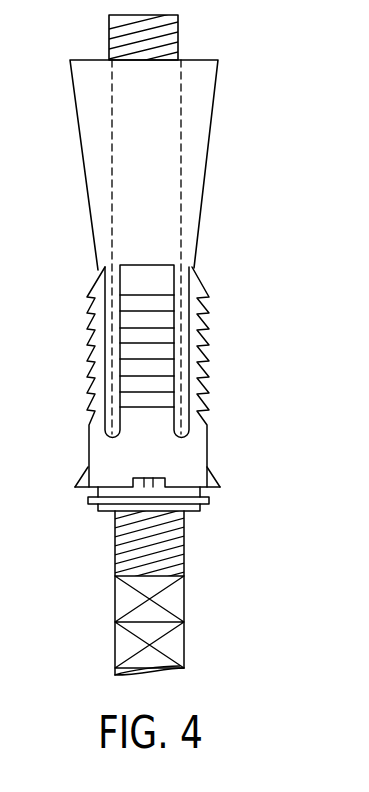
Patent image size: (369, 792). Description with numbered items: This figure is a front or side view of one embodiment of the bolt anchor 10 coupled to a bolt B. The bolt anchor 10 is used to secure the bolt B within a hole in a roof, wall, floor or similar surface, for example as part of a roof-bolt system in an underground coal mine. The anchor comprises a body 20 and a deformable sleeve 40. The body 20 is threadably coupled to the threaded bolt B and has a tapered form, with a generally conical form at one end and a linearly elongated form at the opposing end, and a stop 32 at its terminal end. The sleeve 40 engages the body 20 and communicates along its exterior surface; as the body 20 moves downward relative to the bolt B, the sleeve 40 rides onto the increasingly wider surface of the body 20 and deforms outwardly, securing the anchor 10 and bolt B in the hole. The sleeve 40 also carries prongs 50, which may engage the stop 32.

The bolt anchor 10 is at (264, 101).
The body 20 is at (198, 170).
The deformable sleeve 40 is at (223, 349).
The prongs 50 is at (82, 486).
The stop 32 is at (208, 498).
The bolt B is at (117, 577).